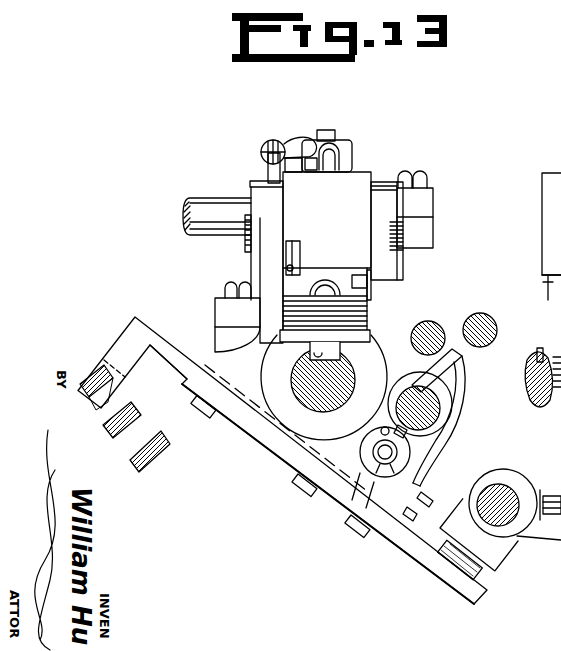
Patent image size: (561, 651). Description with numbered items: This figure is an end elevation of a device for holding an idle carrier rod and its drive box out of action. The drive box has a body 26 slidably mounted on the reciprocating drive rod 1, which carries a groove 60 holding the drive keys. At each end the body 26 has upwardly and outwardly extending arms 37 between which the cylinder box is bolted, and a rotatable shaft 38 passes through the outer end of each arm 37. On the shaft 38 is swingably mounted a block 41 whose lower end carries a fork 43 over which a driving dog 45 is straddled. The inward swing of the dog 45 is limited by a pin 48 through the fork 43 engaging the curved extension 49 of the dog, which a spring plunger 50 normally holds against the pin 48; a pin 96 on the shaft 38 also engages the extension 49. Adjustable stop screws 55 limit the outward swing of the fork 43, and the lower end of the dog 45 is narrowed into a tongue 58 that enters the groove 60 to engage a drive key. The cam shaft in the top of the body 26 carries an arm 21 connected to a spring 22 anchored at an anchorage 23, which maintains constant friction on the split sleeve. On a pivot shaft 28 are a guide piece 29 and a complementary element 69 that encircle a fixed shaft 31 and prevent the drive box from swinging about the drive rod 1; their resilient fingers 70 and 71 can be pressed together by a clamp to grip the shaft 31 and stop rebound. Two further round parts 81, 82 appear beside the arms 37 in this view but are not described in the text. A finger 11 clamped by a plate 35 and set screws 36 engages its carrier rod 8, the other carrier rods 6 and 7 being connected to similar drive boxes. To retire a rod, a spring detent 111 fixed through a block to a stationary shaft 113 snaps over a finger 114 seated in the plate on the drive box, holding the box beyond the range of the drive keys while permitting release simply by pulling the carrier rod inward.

The drive rod 1 is at (280, 377).
The carrier rod 6 is at (147, 465).
The carrier rod 7 is at (120, 440).
The carrier rod 8 is at (95, 412).
The finger 11 is at (148, 327).
The arm 21 is at (297, 143).
The spring 22 is at (268, 143).
The anchorage 23 is at (267, 170).
The body 26 is at (303, 428).
The pivot shaft 28 is at (373, 452).
The guide piece 29 is at (415, 378).
The fixed shaft 31 is at (438, 412).
The plate 35 is at (267, 448).
The set screws 36 is at (215, 421).
The arms 37 is at (260, 187).
The rotatable shaft 38 is at (200, 200).
The block 41 is at (358, 175).
The fork 43 is at (305, 283).
The driving dog 45 is at (371, 305).
The pin 48 is at (370, 278).
The curved extensions 49 is at (300, 283).
The spring plunger 50 is at (552, 282).
The adjustable stop screws 55 is at (327, 132).
The tongue 58 is at (315, 348).
The groove 60 is at (293, 372).
The complementary element 69 is at (437, 437).
The resilient finger 70 is at (462, 358).
The resilient finger 71 is at (461, 386).
The roller 81 is at (485, 315).
The roller 82 is at (437, 325).
The pin 96 is at (292, 257).
The spring detent 111 is at (480, 572).
The stationary shaft 113 is at (510, 500).
The finger 114 is at (417, 550).